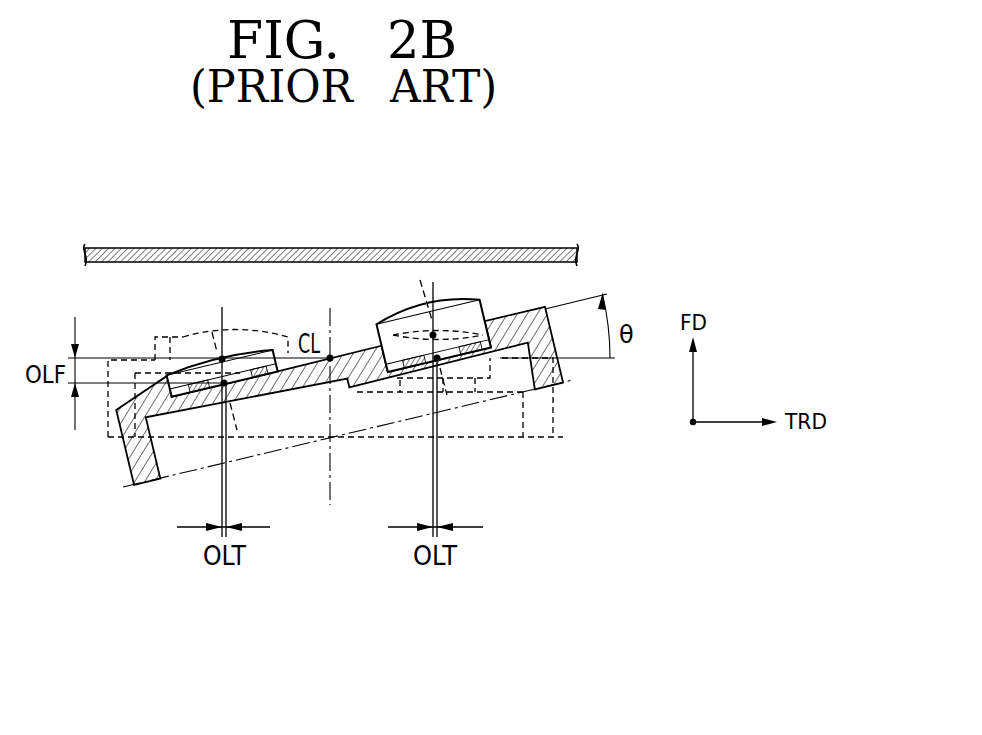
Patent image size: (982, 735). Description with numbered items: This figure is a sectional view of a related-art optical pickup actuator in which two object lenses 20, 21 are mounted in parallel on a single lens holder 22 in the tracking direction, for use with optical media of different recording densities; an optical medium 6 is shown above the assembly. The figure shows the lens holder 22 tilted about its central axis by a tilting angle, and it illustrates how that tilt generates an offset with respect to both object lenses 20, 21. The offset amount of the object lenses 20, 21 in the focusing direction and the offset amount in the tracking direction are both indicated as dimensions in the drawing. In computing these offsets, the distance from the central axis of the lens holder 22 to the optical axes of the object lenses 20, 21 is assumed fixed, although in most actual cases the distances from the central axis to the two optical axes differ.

The document (original) on platen 6 is at (521, 213).
The object lens 20 is at (253, 357).
The object lens 21 is at (395, 320).
The lens holder 22 is at (133, 443).